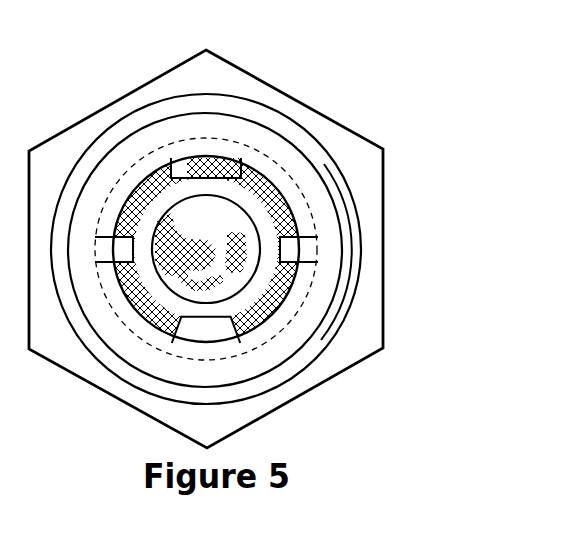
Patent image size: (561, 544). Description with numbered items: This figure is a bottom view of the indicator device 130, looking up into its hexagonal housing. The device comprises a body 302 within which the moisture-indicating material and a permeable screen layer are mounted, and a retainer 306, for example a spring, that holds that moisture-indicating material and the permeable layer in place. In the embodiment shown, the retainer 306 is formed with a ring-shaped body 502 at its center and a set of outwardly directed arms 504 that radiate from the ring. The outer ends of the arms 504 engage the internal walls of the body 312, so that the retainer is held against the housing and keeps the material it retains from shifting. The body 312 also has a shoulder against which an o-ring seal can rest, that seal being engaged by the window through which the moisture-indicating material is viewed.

The indicator device 130 is at (70, 88).
The body 312 is at (243, 90).
The body 302 is at (323, 292).
The retainer 306 is at (197, 172).
The ring-shaped body 502 is at (257, 282).
The outwardly directed arms 504 is at (250, 321).